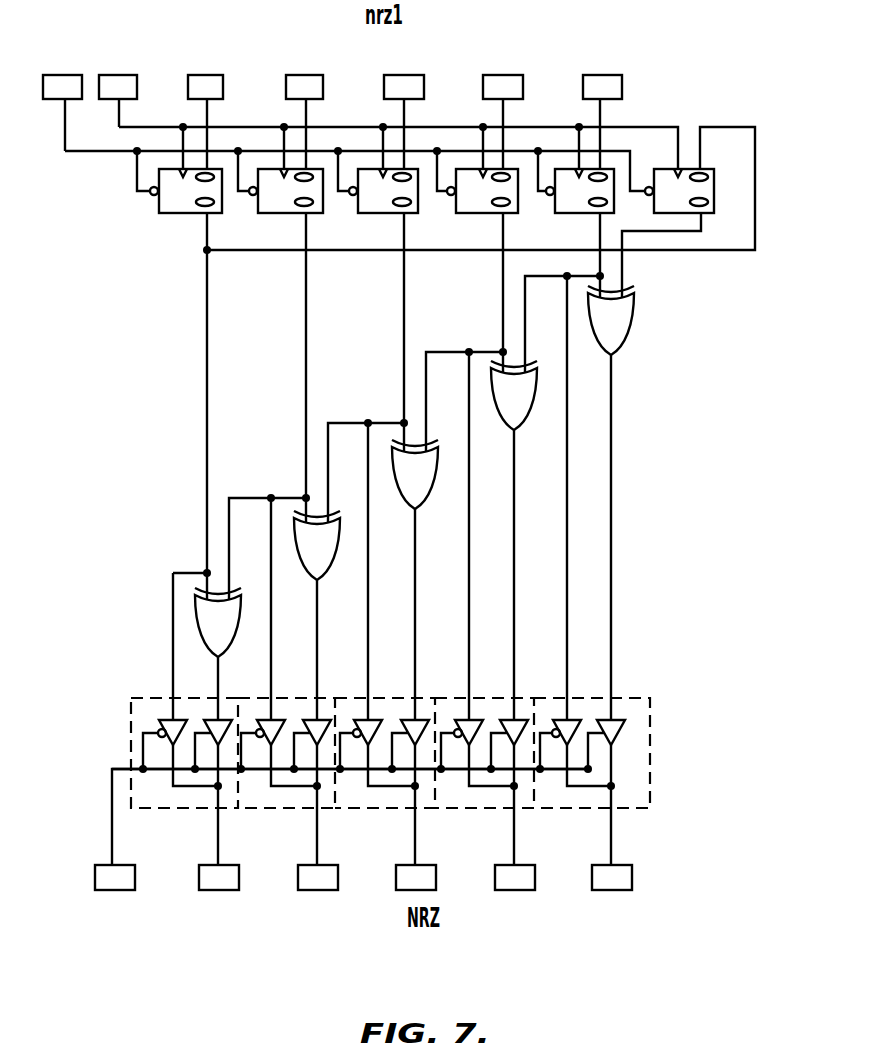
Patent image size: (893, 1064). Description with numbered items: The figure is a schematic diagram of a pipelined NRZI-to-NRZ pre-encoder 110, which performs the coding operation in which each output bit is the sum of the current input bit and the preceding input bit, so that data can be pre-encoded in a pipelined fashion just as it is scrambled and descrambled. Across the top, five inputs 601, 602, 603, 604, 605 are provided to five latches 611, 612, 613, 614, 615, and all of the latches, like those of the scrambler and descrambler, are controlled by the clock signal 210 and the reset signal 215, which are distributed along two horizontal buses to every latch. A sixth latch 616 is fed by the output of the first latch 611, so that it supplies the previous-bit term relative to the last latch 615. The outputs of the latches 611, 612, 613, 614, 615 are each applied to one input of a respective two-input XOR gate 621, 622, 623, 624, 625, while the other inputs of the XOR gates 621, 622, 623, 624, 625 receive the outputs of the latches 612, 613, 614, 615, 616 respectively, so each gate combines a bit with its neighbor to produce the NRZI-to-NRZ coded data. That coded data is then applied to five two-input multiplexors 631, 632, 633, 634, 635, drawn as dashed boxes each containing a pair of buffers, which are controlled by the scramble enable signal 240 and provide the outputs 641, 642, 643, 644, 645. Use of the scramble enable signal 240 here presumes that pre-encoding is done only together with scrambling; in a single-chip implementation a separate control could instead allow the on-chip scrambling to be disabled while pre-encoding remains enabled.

The scrambler circuit 110 is at (725, 761).
The reset signal 215 is at (68, 76).
The clock signal 210 is at (125, 76).
The input 601 is at (213, 76).
The input 602 is at (312, 76).
The input 603 is at (410, 76).
The input 604 is at (509, 76).
The input 605 is at (613, 76).
The latch 611 is at (181, 213).
The latch 612 is at (282, 213).
The latch 613 is at (382, 213).
The latch 614 is at (482, 213).
The latch 615 is at (575, 213).
The latch 616 is at (714, 200).
The XOR gate 621 is at (203, 647).
The XOR gate 622 is at (297, 557).
The XOR gate 623 is at (395, 483).
The XOR gate 624 is at (497, 413).
The XOR gate 625 is at (593, 340).
The multiplexor 631 is at (140, 697).
The multiplexor 632 is at (287, 697).
The multiplexor 633 is at (388, 697).
The multiplexor 634 is at (487, 697).
The multiplexor 635 is at (586, 697).
The scramble enable signal 240 is at (123, 865).
The output 641 is at (232, 865).
The output 642 is at (331, 865).
The output 643 is at (429, 865).
The output 644 is at (529, 865).
The output 645 is at (626, 865).